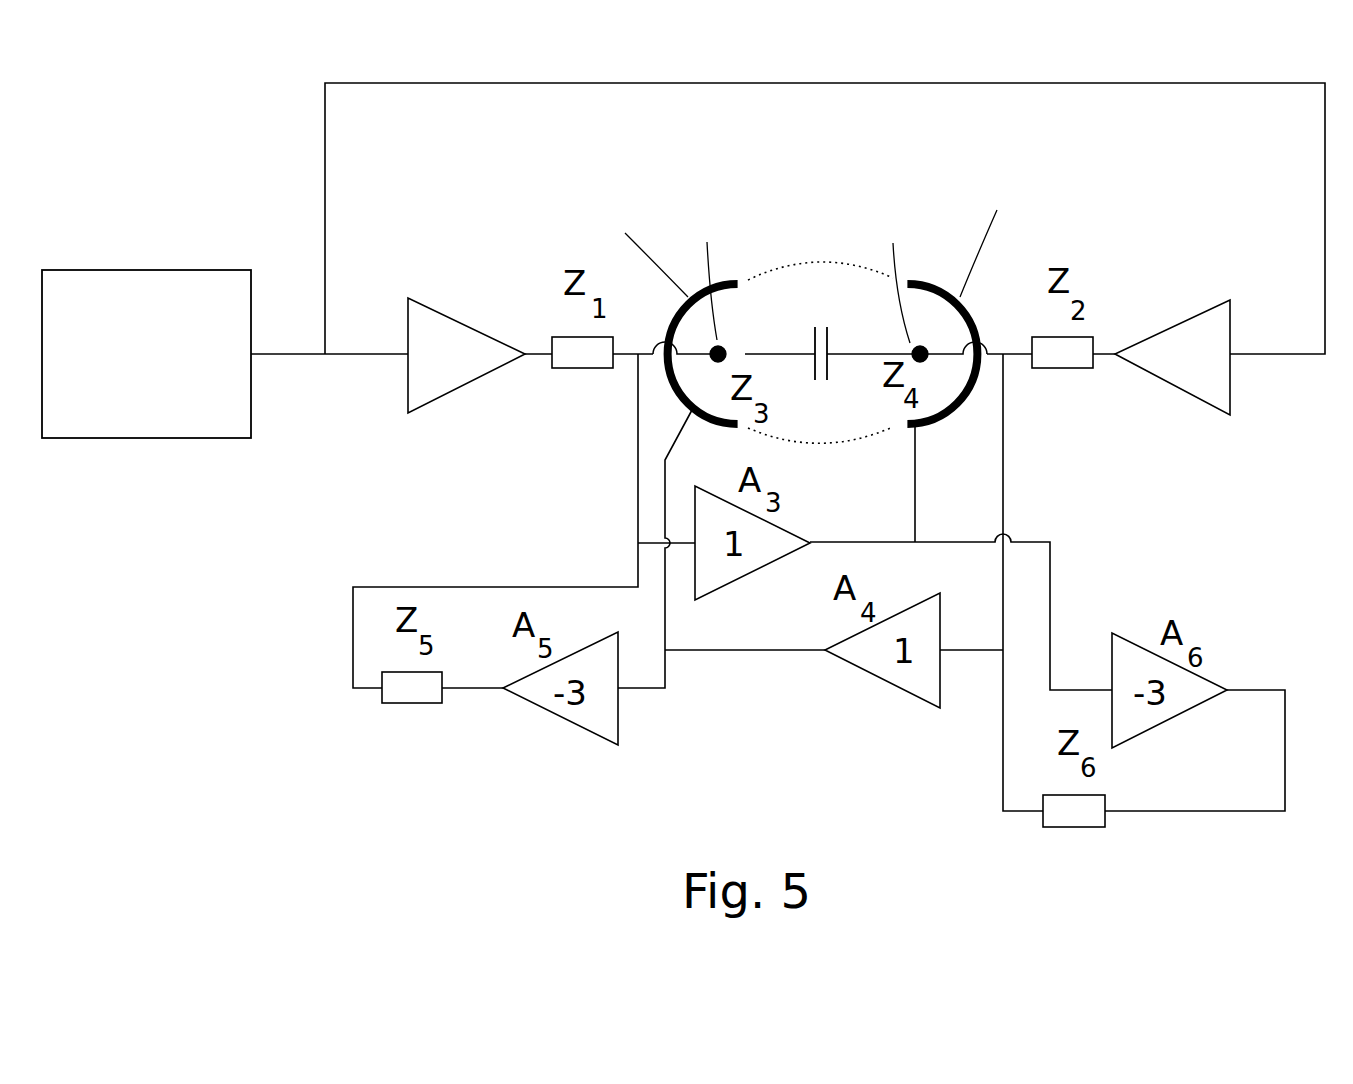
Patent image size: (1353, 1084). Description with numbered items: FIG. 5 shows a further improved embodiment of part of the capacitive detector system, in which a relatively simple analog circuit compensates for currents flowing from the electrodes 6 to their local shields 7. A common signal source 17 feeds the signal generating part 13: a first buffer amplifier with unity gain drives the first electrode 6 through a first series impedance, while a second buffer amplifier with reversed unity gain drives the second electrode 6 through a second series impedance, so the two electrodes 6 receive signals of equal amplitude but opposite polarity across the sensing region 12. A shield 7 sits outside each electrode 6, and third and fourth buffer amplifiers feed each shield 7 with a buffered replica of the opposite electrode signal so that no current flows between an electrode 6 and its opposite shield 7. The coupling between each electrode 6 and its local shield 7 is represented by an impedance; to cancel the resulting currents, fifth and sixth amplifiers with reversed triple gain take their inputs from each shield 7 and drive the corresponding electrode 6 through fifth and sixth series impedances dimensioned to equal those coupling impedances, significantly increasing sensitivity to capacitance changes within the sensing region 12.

The electrode 6 is at (723, 343).
The shield 7 is at (675, 297).
The sensing region 12 is at (827, 257).
The signal generating part 13 is at (492, 440).
The signal source 17 is at (141, 424).